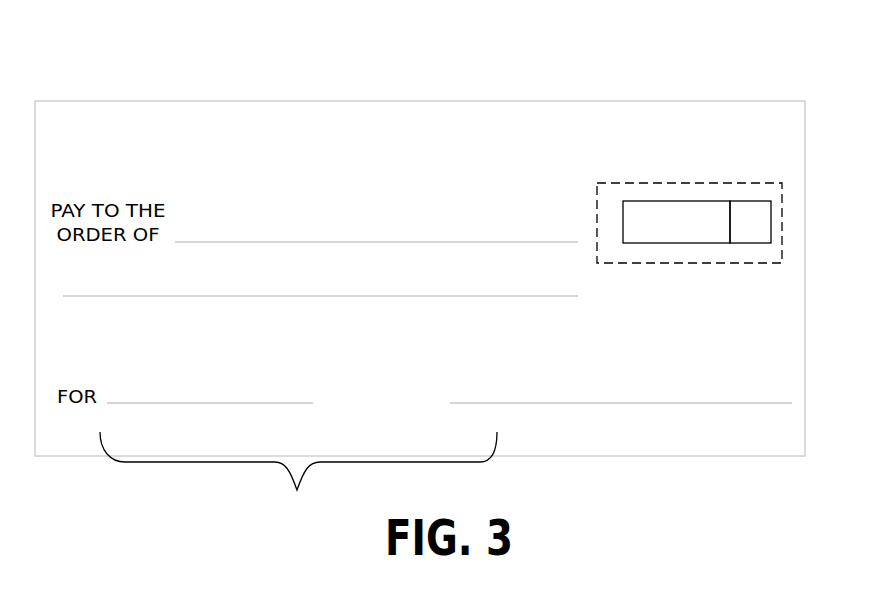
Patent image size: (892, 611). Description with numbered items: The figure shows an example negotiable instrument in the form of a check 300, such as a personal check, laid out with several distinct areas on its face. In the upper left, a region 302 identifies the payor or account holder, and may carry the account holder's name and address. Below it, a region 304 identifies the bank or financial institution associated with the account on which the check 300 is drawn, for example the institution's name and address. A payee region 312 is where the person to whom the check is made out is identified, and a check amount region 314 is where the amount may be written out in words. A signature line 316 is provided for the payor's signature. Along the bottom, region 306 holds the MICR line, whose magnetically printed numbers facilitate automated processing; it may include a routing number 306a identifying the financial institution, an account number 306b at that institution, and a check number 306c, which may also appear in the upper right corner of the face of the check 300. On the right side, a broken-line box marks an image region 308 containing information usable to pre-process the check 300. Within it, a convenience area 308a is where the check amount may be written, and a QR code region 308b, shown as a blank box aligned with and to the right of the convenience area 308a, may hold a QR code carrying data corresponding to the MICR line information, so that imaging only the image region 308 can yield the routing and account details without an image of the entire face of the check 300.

The check 300 is at (242, 88).
The region 302 is at (123, 122).
The region 304 is at (125, 335).
The region 306 is at (434, 296).
The routing number 306a is at (187, 430).
The account number 306b is at (308, 432).
The check number 306c is at (470, 430).
The image region 308 is at (668, 182).
The convenience area 308a is at (664, 215).
The QR code region 308b is at (758, 218).
The payee region 312 is at (308, 225).
The check amount region 314 is at (135, 282).
The signature line 316 is at (640, 391).